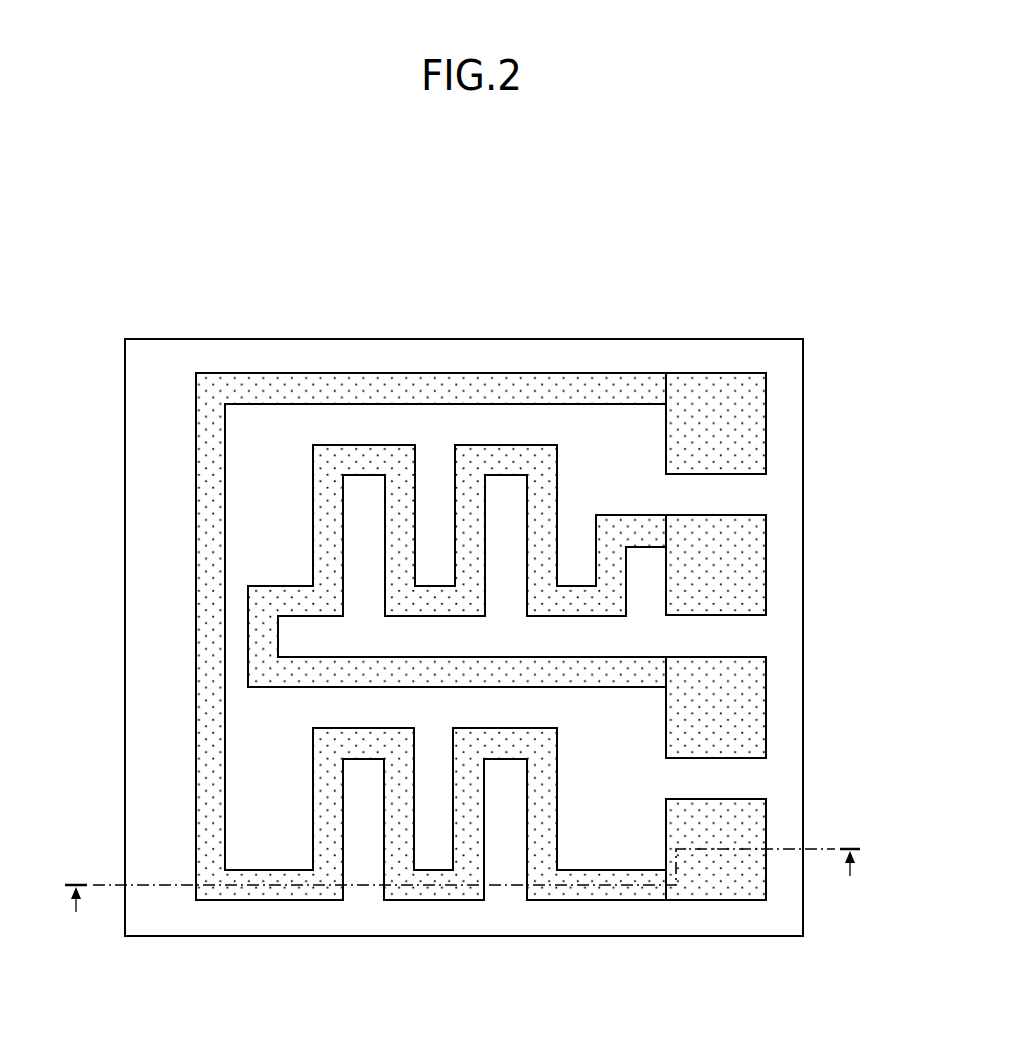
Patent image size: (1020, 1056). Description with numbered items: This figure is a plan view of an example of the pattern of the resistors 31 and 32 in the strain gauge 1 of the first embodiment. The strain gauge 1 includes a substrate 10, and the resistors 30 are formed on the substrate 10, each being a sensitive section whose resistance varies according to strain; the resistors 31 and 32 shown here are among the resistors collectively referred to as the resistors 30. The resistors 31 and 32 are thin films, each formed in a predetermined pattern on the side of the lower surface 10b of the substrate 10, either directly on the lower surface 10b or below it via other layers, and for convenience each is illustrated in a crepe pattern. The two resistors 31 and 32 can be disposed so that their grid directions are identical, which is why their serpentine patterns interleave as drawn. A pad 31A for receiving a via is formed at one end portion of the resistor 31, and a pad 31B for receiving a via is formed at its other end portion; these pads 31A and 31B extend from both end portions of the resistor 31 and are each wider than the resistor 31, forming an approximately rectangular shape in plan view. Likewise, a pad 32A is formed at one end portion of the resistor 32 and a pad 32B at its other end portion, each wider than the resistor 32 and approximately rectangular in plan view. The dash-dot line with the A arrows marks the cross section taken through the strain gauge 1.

The strain gauge 1 is at (77, 260).
The substrate 10 is at (692, 327).
The lower surface of substrate 10b is at (776, 360).
The resistors 30 is at (218, 362).
The resistor 31 is at (432, 900).
The pad 31A is at (752, 394).
The pad 31B is at (752, 820).
The resistor 32 is at (360, 460).
The pad 32A is at (752, 536).
The pad 32B is at (752, 678).